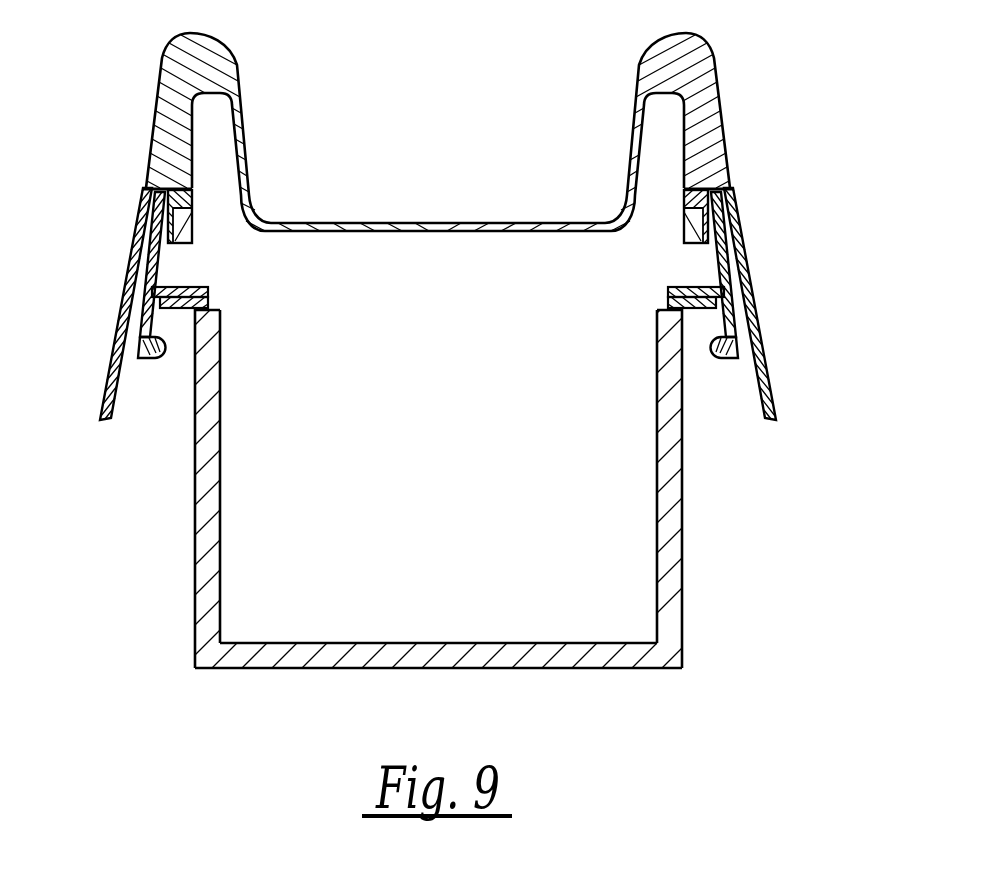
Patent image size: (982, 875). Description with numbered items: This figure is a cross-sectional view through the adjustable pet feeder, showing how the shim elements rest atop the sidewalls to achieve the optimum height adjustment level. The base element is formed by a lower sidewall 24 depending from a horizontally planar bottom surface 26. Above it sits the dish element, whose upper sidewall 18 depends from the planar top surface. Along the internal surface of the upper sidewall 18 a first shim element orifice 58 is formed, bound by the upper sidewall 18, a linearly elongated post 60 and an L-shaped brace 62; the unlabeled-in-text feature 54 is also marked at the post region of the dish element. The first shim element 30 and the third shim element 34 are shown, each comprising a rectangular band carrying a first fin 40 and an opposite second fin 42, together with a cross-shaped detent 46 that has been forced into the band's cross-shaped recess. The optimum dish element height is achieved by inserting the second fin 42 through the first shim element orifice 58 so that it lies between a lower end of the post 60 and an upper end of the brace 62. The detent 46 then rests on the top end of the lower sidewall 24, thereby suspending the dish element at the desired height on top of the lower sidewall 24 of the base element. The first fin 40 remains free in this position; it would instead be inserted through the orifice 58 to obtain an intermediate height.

The linearly elongated post 60 is at (165, 60).
The second fin 42 is at (700, 183).
The inner channel wall 54 is at (192, 189).
The first shim element orifice 58 is at (670, 190).
The upper sidewall 18 is at (150, 168).
The first shim element 30 is at (728, 292).
The first fin 40 is at (738, 356).
The third shim element 34 is at (153, 290).
The cross-shaped detent 46 is at (662, 296).
The L-shaped brace 62 is at (195, 226).
The lower sidewall 24 is at (656, 366).
The bottom surface 26 is at (500, 672).